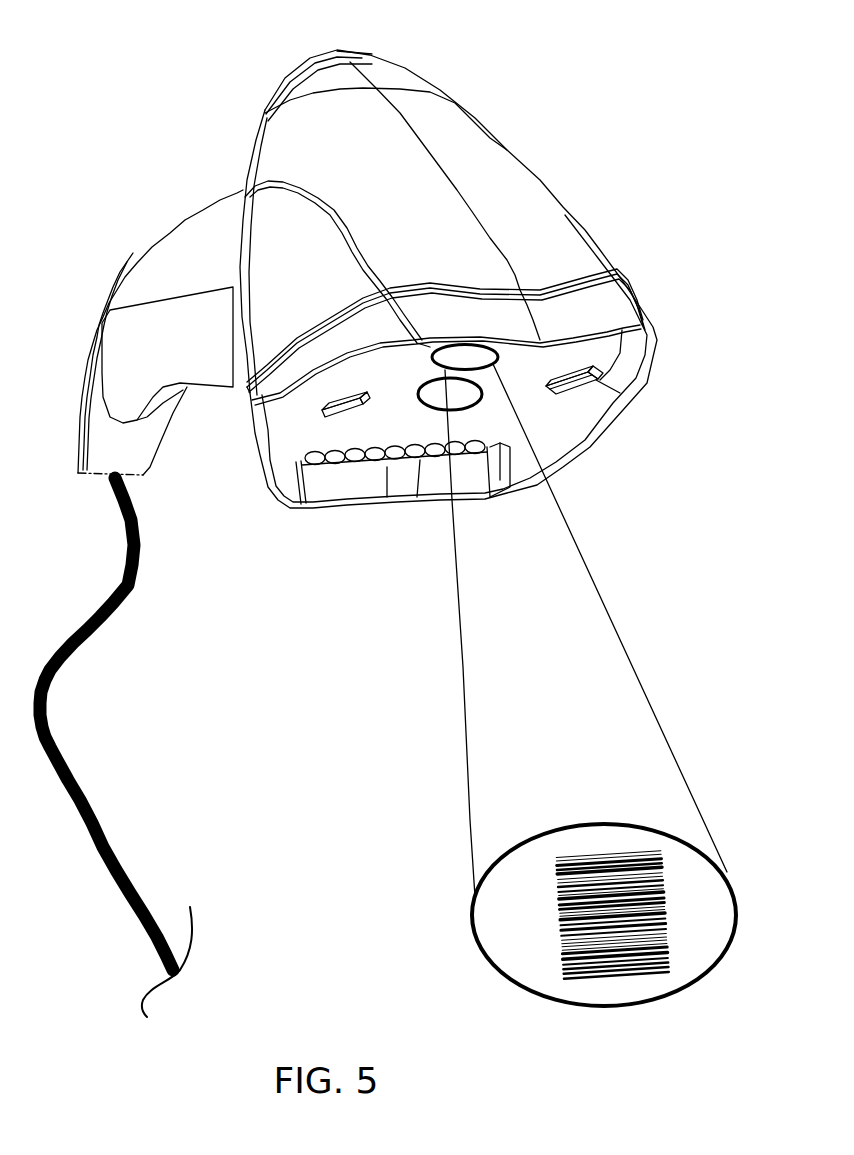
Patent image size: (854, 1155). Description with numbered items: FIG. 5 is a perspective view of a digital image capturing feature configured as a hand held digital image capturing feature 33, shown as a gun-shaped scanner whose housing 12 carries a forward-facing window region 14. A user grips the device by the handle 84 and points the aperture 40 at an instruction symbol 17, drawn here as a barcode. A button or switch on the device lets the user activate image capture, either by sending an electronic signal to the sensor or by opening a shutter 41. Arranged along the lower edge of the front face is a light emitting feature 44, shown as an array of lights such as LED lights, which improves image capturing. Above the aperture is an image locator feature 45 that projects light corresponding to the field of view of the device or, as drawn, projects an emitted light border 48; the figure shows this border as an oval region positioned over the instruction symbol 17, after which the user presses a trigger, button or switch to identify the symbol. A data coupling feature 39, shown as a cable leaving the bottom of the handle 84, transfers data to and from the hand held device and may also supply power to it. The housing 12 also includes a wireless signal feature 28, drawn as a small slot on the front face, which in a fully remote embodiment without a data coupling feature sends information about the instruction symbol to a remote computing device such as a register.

The housing 12 is at (258, 104).
The scan window / front face 14 is at (446, 433).
The instruction symbol 17 is at (648, 849).
The wireless signal feature 28 is at (515, 426).
The hand held digital image capturing feature 33 is at (460, 201).
The data coupling feature 39 is at (121, 747).
The aperture 40 is at (428, 473).
The shutter 41 is at (480, 633).
The light emitting feature 44 is at (394, 513).
The image locator feature 45 is at (557, 299).
The emitted light border 48 is at (555, 685).
The handle 84 is at (160, 297).